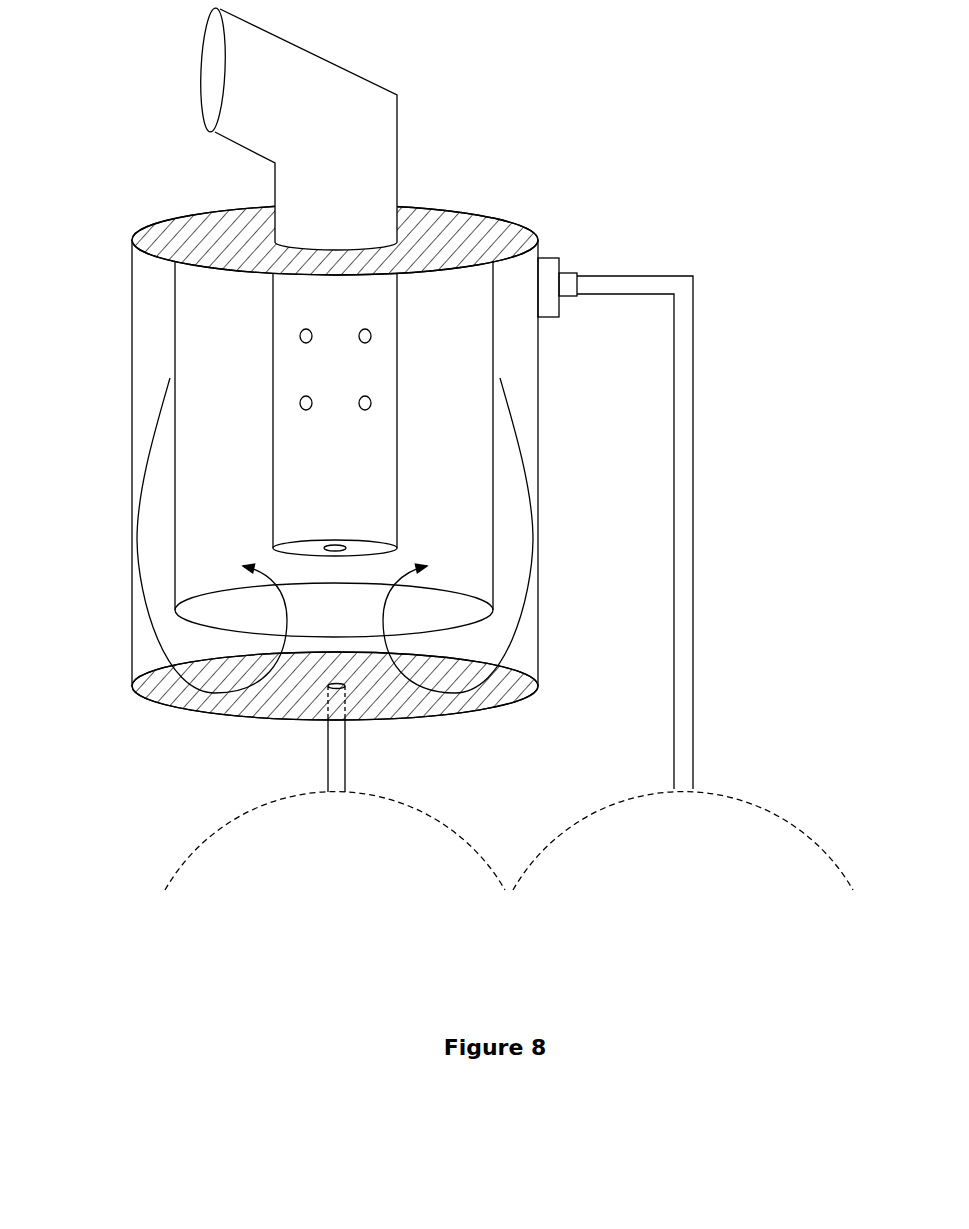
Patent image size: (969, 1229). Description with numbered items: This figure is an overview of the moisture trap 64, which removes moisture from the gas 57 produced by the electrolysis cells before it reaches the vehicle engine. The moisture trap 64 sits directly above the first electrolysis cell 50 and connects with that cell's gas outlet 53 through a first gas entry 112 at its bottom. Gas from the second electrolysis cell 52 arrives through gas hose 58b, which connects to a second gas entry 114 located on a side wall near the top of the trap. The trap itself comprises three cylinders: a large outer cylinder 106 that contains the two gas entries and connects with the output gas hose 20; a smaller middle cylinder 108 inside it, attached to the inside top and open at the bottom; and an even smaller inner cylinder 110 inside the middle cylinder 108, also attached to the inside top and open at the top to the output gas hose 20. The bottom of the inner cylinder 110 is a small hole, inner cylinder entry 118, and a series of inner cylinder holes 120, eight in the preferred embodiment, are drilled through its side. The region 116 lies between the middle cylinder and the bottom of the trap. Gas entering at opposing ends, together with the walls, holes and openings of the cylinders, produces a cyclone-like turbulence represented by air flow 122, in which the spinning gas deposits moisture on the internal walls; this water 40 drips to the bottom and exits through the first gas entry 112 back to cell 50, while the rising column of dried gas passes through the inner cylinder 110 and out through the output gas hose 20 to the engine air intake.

The output gas hose 20 is at (348, 85).
The water 40 is at (313, 733).
The first electrolysis cell 50 is at (213, 833).
The second electrolysis cell 52 is at (736, 791).
The gas outlet 53 is at (350, 792).
The gas 57 is at (193, 58).
The gas hose 58b is at (687, 391).
The moisture trap 64 is at (95, 292).
The outer cylinder 106 is at (132, 348).
The middle cylinder 108 is at (175, 460).
The inner cylinder 110 is at (273, 498).
The first gas entry 112 is at (330, 692).
The second gas entry 114 is at (549, 257).
The lower chamber 116 is at (460, 612).
The inner cylinder entry 118 is at (347, 547).
The inner cylinder holes 120 is at (371, 336).
The air flow 122 is at (531, 578).